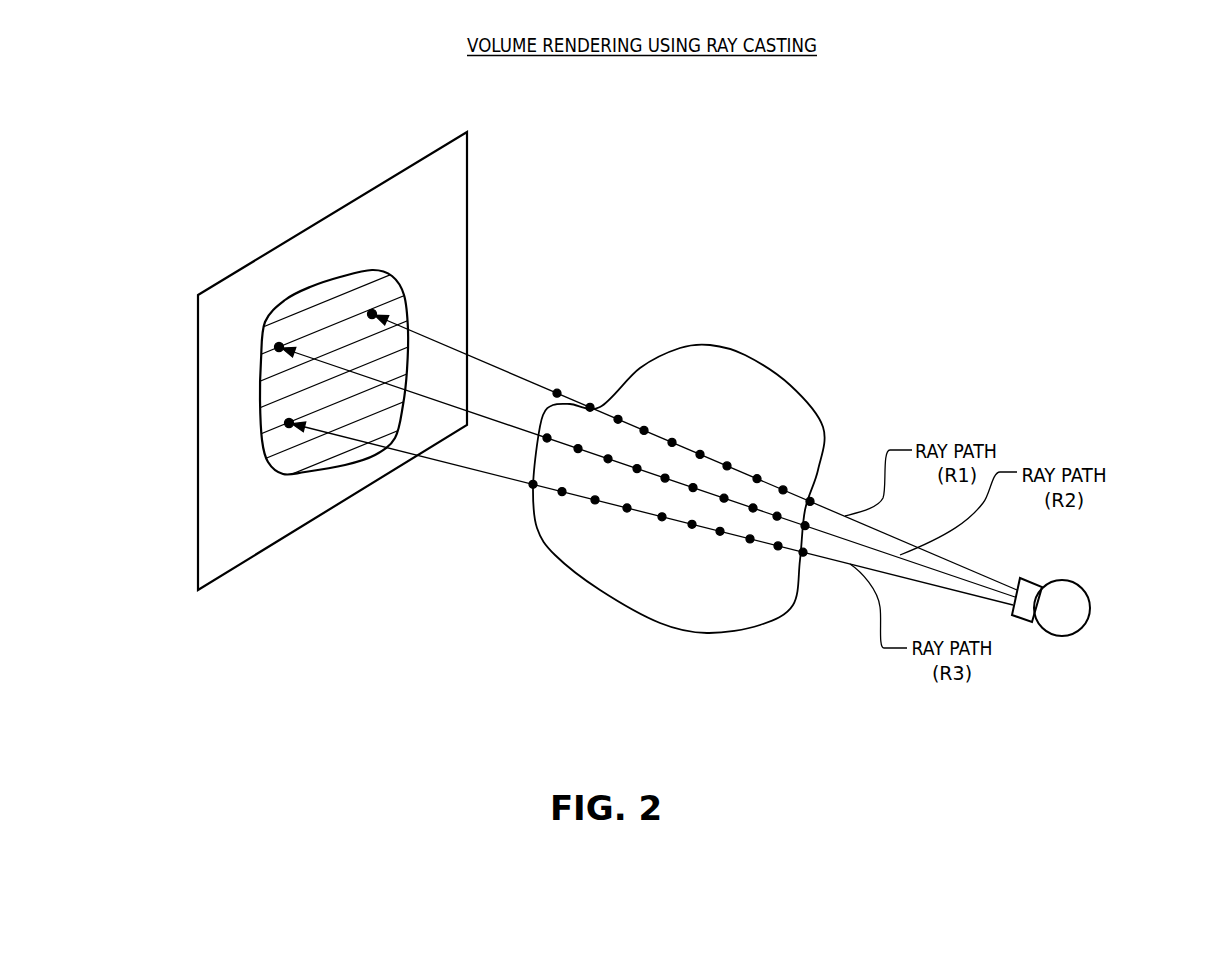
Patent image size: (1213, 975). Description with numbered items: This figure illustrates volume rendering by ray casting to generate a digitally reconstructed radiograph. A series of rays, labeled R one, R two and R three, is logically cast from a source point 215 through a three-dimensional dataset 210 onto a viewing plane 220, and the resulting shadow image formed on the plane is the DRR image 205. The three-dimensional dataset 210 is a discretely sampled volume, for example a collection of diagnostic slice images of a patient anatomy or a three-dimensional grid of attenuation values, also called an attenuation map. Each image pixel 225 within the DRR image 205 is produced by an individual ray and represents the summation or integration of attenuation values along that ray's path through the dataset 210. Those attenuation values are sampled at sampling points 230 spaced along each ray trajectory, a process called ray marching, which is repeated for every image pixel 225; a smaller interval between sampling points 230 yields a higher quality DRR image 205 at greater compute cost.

The DRR image 205 is at (398, 288).
The 3D dataset 210 is at (742, 356).
The source point 215 is at (1064, 580).
The viewing plane 220 is at (349, 206).
The image pixel 225 is at (289, 426).
The sampling point 230 is at (560, 493).